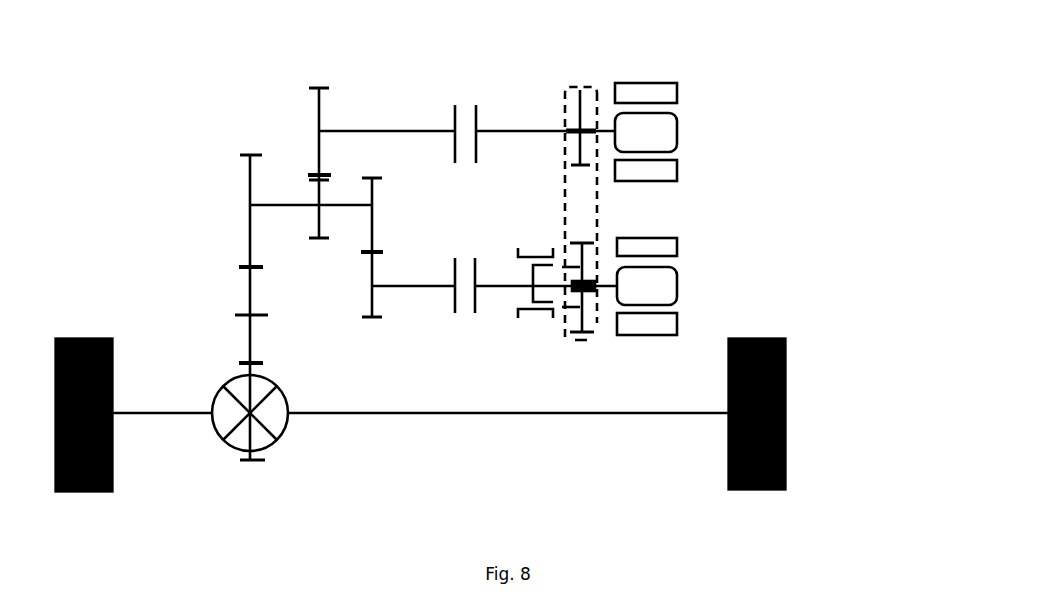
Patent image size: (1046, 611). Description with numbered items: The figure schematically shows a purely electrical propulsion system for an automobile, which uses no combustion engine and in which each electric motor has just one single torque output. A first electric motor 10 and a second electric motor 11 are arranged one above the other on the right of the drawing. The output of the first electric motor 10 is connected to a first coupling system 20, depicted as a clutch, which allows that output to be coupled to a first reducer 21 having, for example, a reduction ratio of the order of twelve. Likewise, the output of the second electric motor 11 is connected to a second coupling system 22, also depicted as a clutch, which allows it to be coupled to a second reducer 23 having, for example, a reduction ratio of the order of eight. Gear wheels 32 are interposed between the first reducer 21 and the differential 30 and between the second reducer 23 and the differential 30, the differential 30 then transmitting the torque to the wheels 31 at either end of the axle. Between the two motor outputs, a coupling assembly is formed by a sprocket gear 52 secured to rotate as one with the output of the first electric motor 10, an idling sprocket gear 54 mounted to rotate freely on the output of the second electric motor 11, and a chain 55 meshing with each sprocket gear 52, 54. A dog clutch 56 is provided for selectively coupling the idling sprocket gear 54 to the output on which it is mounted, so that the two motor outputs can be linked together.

The first electric motor 10 is at (643, 92).
The second electric motor 11 is at (665, 248).
The first coupling system 20 is at (467, 118).
The first reducer 21 is at (319, 112).
The second coupling system 22 is at (475, 302).
The second reducer 23 is at (372, 227).
The differential 30 is at (277, 418).
The wheels 31 is at (80, 338).
The gear wheels 32 is at (248, 300).
The sprocket gear 52 is at (582, 97).
The idling sprocket gear 54 is at (583, 313).
The chain 55 is at (597, 205).
The dog clutch 56 is at (542, 255).